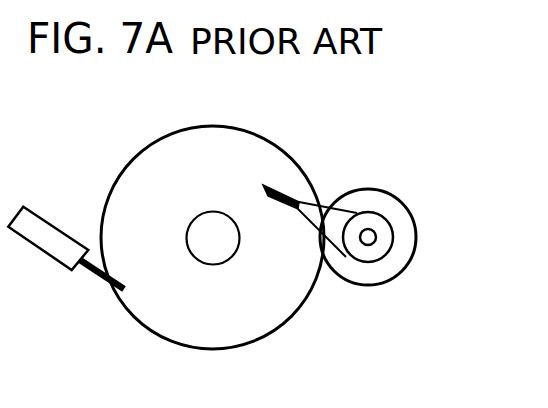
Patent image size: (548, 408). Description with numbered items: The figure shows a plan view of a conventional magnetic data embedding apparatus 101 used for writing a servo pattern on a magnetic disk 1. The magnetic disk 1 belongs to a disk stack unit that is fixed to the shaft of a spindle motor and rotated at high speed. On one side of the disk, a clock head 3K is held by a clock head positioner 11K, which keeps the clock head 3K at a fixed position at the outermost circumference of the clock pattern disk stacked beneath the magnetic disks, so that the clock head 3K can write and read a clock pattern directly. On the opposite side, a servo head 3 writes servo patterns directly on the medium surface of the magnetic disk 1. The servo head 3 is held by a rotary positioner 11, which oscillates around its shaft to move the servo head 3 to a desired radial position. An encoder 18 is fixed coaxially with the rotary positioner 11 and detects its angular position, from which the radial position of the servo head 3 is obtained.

The magnetic data embedding apparatus 101 is at (416, 162).
The magnetic disk 1 is at (165, 327).
The servo head 3 is at (287, 190).
The rotary positioner 11 is at (382, 254).
The encoder 18 is at (413, 227).
The clock head positioner 11K is at (60, 231).
The clock head 3K is at (90, 273).